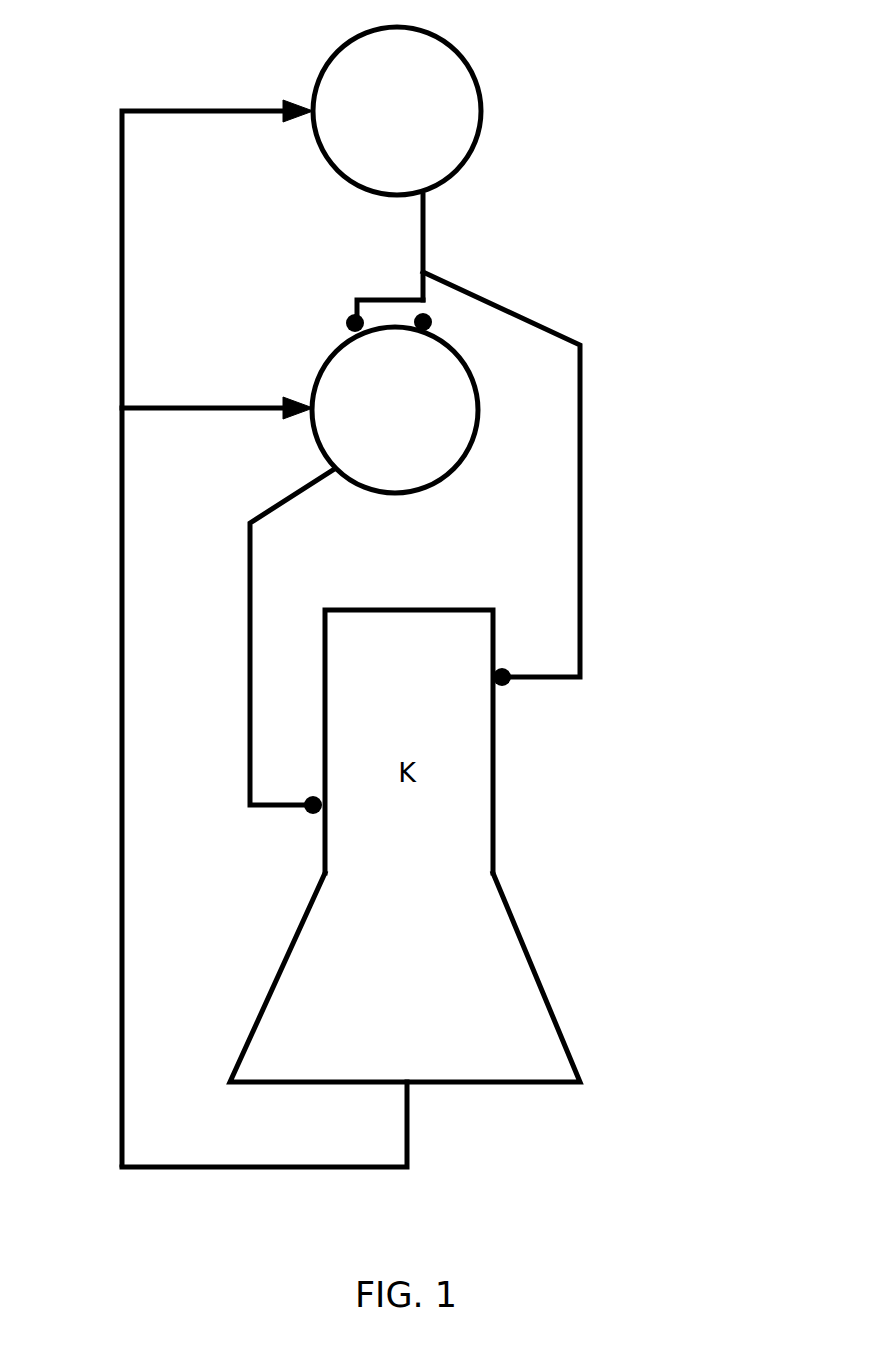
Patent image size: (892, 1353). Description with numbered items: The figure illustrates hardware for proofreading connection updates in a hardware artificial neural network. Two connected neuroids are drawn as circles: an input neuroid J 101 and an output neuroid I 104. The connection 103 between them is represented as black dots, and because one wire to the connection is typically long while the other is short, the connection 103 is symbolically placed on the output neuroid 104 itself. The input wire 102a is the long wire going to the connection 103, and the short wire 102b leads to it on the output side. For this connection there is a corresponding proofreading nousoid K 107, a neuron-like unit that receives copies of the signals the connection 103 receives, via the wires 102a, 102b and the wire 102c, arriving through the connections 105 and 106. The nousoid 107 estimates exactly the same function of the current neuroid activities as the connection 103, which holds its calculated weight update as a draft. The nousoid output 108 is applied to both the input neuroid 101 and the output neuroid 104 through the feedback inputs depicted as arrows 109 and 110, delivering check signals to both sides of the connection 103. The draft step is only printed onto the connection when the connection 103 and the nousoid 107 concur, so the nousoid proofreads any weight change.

The input neuroid J 101 is at (457, 52).
The input wire 102a is at (424, 228).
The short wire 102b is at (397, 297).
The wire 102c is at (248, 557).
The connection 103 is at (353, 318).
The output neuroid I 104 is at (470, 450).
The connection 105 is at (510, 682).
The connection 106 is at (310, 813).
The proofreading nousoid 107 is at (505, 908).
The nousoid output 108 is at (408, 1107).
The feedback input 109 is at (218, 407).
The feedback input 110 is at (192, 110).